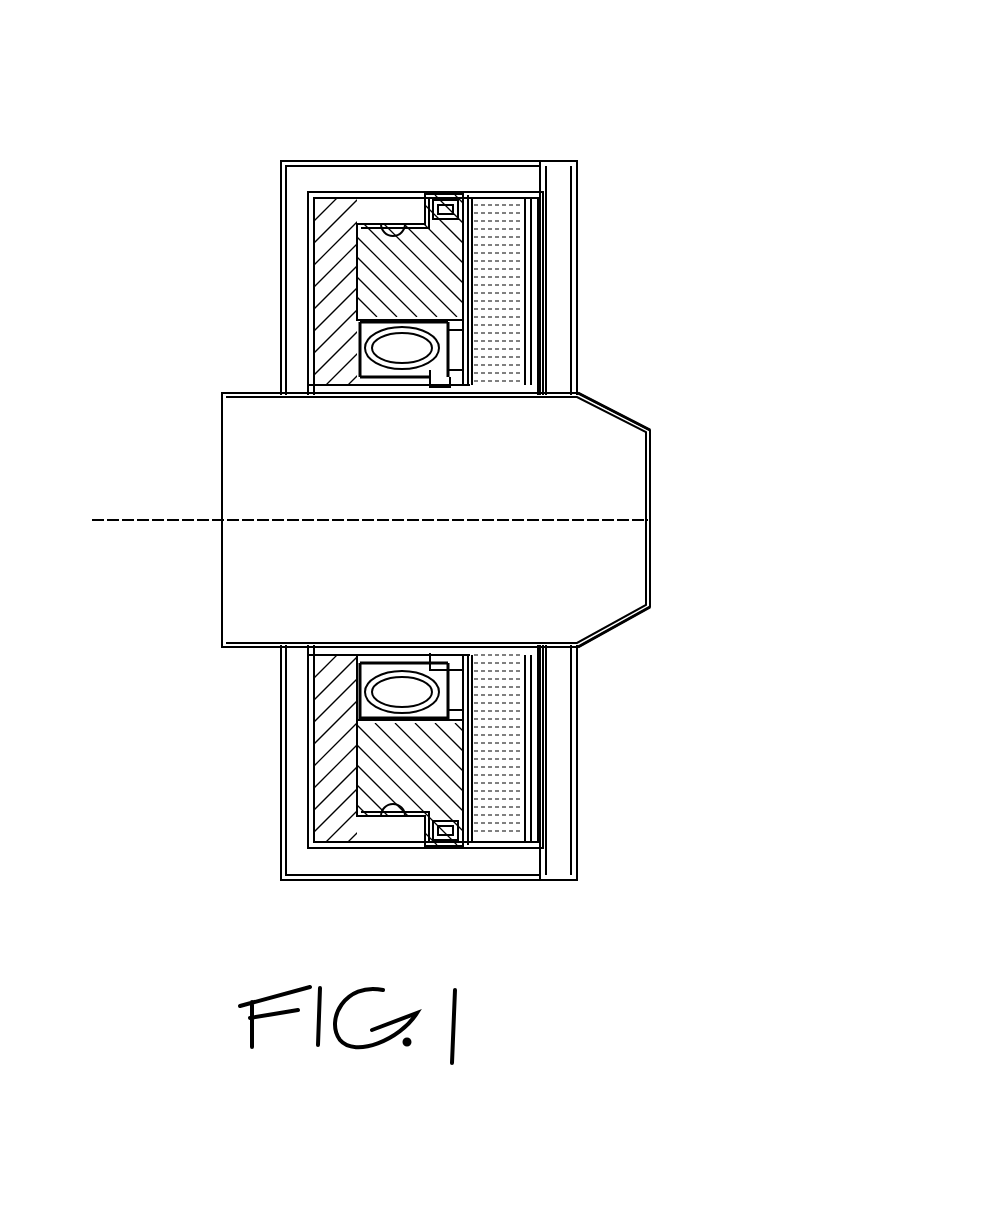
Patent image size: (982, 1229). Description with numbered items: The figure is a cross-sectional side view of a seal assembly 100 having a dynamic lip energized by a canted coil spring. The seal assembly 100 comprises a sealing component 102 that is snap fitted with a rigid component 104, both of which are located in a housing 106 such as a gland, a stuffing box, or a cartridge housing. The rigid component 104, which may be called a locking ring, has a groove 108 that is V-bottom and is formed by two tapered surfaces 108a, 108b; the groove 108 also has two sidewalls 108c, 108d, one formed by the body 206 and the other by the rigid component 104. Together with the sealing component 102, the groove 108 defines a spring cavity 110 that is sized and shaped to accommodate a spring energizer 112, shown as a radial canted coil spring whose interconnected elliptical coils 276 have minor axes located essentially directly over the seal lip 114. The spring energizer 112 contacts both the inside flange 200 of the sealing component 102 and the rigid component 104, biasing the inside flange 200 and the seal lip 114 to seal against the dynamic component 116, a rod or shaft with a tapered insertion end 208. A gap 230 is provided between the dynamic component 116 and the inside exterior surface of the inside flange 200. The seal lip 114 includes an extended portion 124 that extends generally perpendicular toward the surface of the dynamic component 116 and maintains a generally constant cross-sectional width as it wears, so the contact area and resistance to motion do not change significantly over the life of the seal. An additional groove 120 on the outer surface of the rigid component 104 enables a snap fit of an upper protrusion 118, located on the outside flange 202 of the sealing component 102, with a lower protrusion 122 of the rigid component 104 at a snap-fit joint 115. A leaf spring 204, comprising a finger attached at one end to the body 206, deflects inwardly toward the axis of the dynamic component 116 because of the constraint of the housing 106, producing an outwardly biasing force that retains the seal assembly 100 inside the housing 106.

The seal assembly 100 is at (656, 168).
The sealing component 102 is at (338, 240).
The rigid component 104 is at (425, 267).
The housing 106 is at (281, 172).
The groove 108 is at (447, 738).
The tapered surface 108a is at (365, 322).
The tapered surface 108b is at (440, 322).
The sidewall 108c is at (367, 357).
The sidewall 108d is at (468, 350).
The spring cavity 110 is at (392, 353).
The spring energizer 112 is at (356, 688).
The seal lip 114 is at (414, 393).
The snap-fit joint 115 is at (397, 213).
The dynamic component 116 is at (606, 482).
The upper protrusion 118 is at (407, 795).
The additional groove 120 is at (386, 224).
The lower protrusion 122 is at (382, 224).
The extended portion 124 is at (418, 648).
The inside flange 200 is at (368, 662).
The outside flange 202 is at (357, 207).
The leaf spring 204 is at (443, 850).
The body 206 is at (392, 758).
The tapered insertion end 208 is at (612, 408).
The gap 230 is at (365, 368).
The coils 276 is at (455, 715).